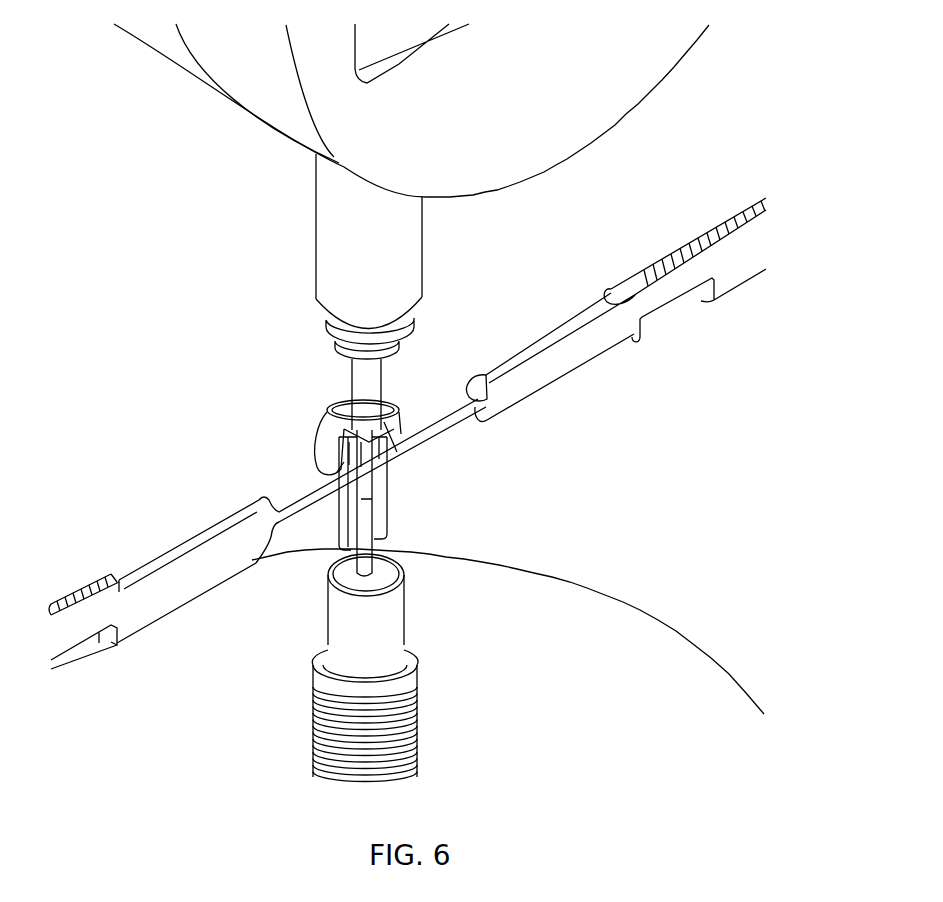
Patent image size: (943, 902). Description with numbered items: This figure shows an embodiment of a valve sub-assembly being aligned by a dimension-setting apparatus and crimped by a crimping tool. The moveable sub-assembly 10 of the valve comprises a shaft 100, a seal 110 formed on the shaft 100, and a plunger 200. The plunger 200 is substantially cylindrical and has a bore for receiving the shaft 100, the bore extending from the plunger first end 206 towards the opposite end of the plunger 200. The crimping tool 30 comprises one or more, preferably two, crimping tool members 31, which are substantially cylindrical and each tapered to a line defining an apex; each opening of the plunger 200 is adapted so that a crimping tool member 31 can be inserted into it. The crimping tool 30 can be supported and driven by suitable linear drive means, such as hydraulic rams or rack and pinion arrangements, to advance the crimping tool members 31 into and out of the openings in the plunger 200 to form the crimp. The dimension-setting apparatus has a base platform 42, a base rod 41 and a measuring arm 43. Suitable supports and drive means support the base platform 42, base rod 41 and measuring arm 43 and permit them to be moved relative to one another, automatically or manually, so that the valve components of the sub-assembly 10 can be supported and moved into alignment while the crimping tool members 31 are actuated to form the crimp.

The moveable sub-assembly 10 is at (327, 414).
The crimping tool 30 is at (763, 233).
The crimping tool member 31 is at (443, 427).
The base rod 41 is at (378, 565).
The base platform 42 is at (343, 583).
The measuring arm 43 is at (372, 387).
The shaft 100 is at (368, 470).
The seal 110 is at (344, 425).
The plunger 200 is at (350, 517).
The first end 206 is at (340, 545).